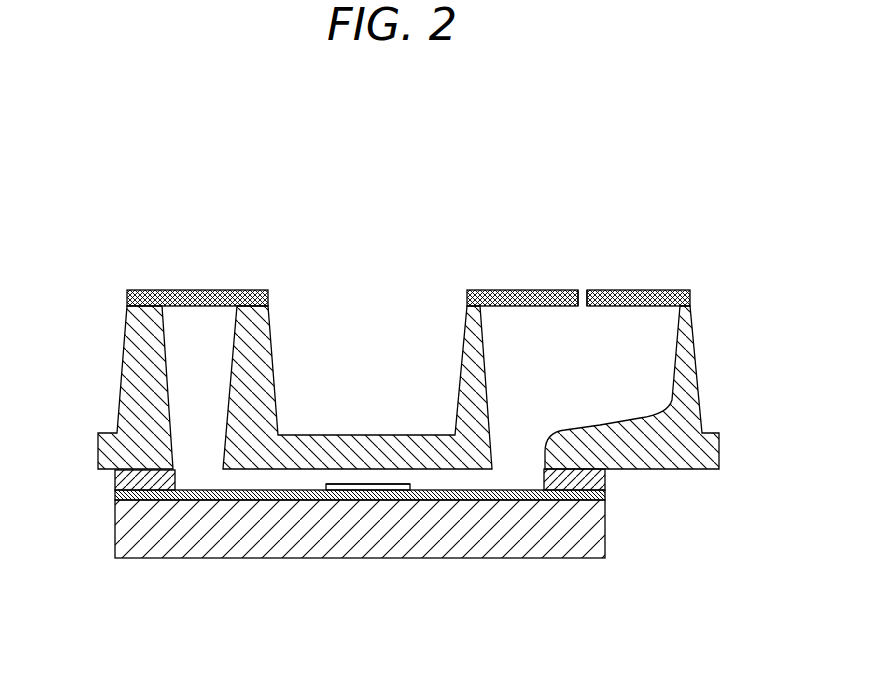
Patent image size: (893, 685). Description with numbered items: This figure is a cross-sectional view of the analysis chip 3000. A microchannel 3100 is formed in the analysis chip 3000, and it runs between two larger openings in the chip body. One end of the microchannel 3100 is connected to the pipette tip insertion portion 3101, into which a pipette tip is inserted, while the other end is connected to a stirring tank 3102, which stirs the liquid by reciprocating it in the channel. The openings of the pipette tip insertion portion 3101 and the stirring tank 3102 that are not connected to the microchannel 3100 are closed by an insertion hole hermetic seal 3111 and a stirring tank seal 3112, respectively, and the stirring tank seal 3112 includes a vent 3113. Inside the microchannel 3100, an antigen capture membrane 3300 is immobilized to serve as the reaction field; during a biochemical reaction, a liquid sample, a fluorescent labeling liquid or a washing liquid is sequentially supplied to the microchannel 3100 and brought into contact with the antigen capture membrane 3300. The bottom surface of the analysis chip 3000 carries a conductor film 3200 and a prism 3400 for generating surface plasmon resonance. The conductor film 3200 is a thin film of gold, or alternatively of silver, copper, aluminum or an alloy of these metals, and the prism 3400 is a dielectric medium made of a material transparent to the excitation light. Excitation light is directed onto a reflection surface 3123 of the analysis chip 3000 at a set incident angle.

The analysis chip 3000 is at (114, 198).
The microchannel 3100 is at (263, 478).
The pipette tip insertion portion 3101 is at (177, 365).
The stirring tank 3102 is at (660, 363).
The insertion hole hermetic seal 3111 is at (242, 290).
The stirring tank seal 3112 is at (668, 290).
The vent 3113 is at (583, 297).
The reflection surface 3123 is at (367, 482).
The conductor film 3200 is at (605, 497).
The antigen capture membrane 3300 is at (360, 484).
The prism 3400 is at (493, 547).